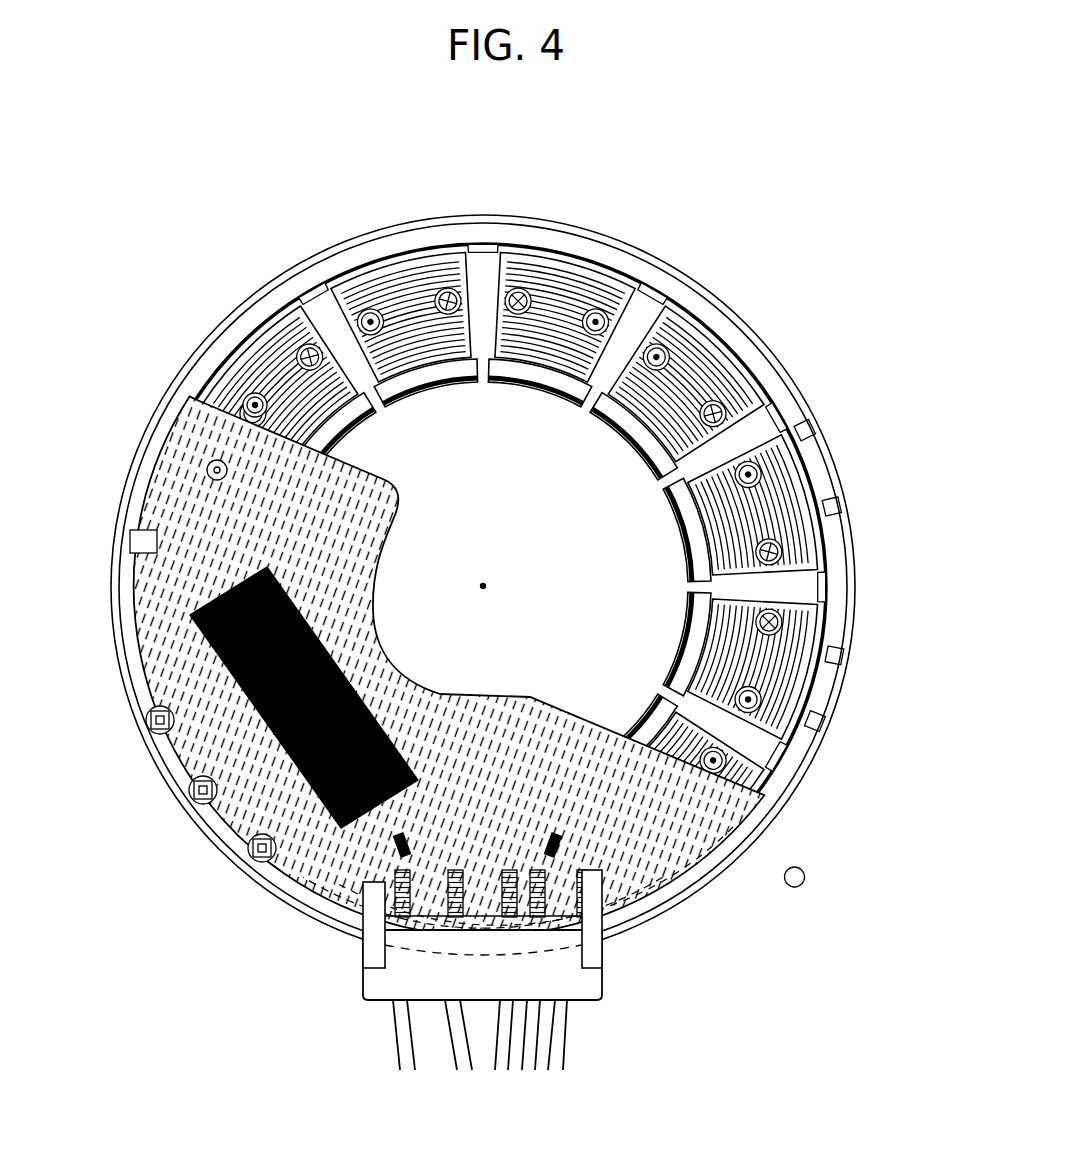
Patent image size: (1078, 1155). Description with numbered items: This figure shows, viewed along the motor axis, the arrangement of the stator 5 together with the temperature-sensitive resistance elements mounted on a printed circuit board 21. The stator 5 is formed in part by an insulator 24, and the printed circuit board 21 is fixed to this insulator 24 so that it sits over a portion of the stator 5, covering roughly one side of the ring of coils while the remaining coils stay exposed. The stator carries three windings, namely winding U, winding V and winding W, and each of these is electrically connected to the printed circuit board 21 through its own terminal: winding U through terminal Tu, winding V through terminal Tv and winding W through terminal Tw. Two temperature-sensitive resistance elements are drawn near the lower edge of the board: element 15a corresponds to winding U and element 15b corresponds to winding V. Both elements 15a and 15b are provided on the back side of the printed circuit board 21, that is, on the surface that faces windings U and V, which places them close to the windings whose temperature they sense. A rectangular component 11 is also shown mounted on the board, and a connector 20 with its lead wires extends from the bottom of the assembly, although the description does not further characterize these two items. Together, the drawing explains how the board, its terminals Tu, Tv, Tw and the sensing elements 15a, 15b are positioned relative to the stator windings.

The stator 5 is at (613, 235).
The insulator 24 is at (227, 340).
The printed circuit board 21 is at (363, 498).
The power module 11 is at (287, 597).
The temperature-sensitive resistance element 15a is at (402, 848).
The temperature-sensitive resistance element 15b is at (560, 850).
The connector 20 is at (377, 993).
The terminal Tu is at (160, 724).
The terminal Tv is at (203, 804).
The terminal Tw is at (262, 862).
The winding U is at (447, 823).
The winding V is at (547, 815).
The winding W is at (778, 789).